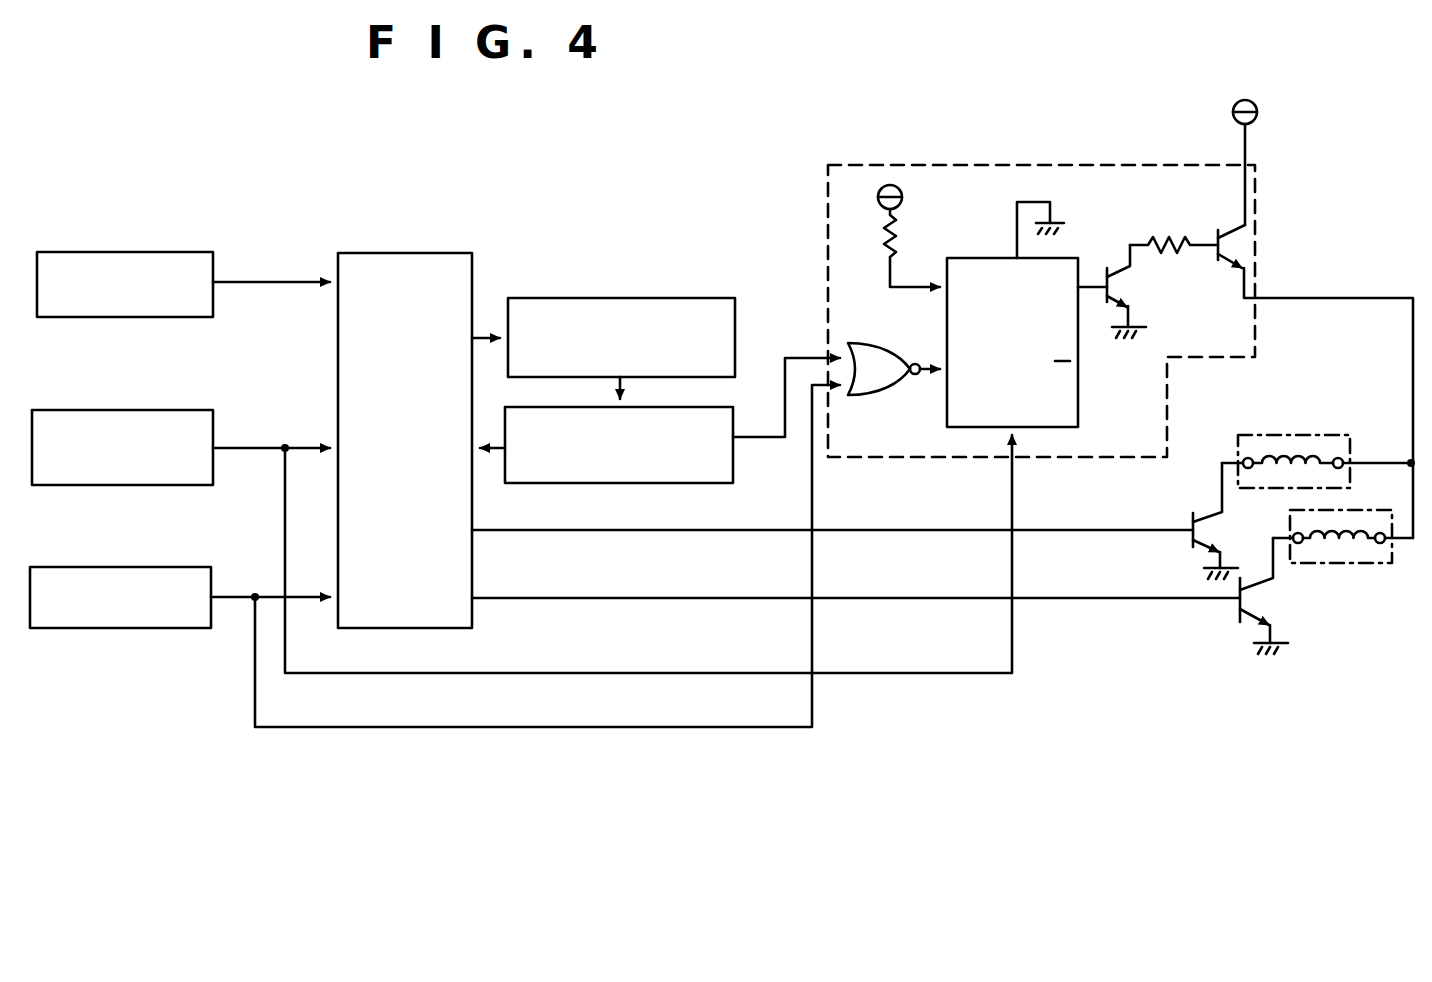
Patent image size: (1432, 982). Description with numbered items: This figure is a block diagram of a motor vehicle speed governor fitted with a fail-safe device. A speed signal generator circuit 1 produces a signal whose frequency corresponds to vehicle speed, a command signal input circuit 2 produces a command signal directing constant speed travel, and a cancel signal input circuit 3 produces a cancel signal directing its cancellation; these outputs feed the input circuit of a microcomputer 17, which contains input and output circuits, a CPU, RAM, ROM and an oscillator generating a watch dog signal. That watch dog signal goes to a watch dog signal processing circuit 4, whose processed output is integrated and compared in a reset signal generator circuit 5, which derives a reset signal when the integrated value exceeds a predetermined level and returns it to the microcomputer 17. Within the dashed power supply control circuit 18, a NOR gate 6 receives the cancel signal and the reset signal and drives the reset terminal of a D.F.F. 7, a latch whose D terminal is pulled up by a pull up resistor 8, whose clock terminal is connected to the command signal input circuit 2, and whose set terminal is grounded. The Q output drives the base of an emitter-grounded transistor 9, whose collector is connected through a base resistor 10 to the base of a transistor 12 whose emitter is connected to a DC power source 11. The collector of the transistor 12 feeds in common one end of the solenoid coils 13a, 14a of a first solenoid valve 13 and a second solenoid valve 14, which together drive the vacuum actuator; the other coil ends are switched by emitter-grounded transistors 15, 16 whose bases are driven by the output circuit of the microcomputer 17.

The speed signal generator circuit 1 is at (71, 252).
The command signal input circuit 2 is at (70, 410).
The cancel signal input circuit 3 is at (67, 567).
The watch dog signal processing circuit 4 is at (672, 298).
The reset signal generator circuit 5 is at (648, 409).
The NOR gate 6 is at (880, 357).
The D.F.F. 7 is at (1081, 384).
The pull up resistor 8 is at (881, 238).
The transistor 9 is at (1128, 284).
The base resistor 10 is at (1166, 238).
The DC power source 11 is at (1258, 110).
The transistor 12 is at (1238, 252).
The first solenoid valve 13 is at (1340, 435).
The solenoid coil 13a is at (1287, 457).
The second solenoid valve 14 is at (1385, 565).
The solenoid coil 14a is at (1338, 562).
The transistor 15 is at (1211, 532).
The transistor 16 is at (1262, 620).
The microcomputer 17 is at (372, 254).
The power supply control circuit 18 is at (978, 163).